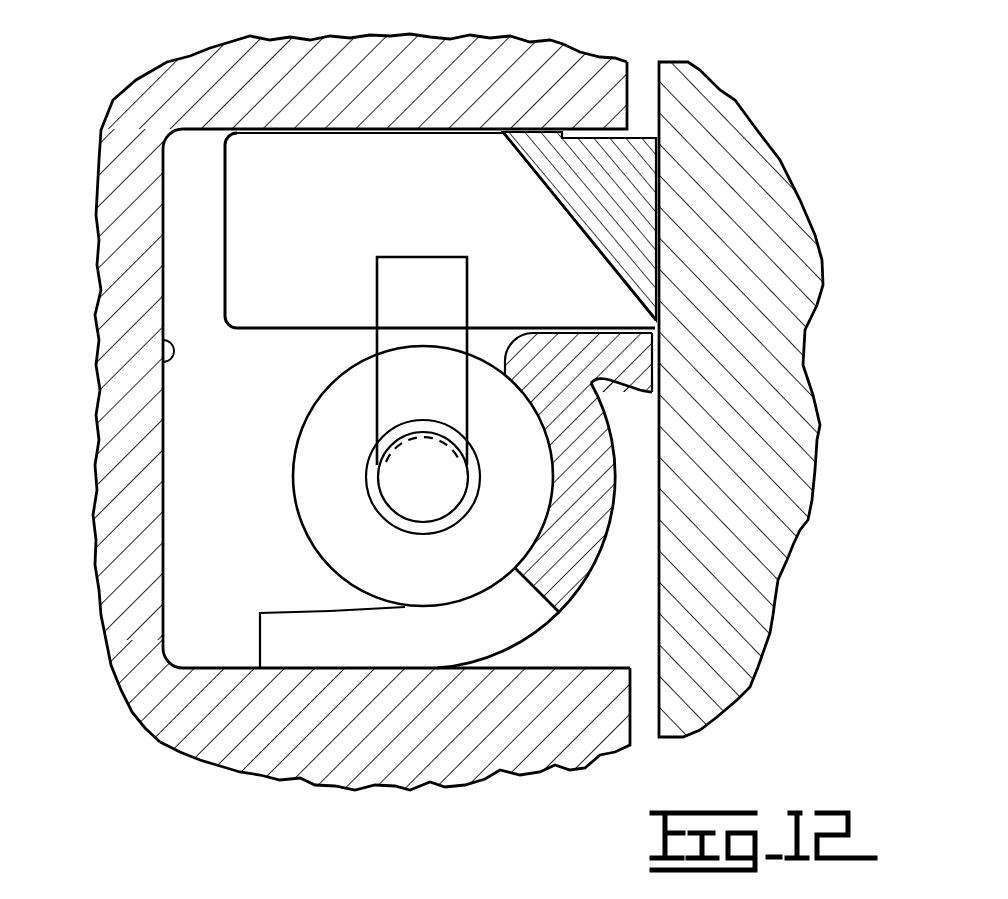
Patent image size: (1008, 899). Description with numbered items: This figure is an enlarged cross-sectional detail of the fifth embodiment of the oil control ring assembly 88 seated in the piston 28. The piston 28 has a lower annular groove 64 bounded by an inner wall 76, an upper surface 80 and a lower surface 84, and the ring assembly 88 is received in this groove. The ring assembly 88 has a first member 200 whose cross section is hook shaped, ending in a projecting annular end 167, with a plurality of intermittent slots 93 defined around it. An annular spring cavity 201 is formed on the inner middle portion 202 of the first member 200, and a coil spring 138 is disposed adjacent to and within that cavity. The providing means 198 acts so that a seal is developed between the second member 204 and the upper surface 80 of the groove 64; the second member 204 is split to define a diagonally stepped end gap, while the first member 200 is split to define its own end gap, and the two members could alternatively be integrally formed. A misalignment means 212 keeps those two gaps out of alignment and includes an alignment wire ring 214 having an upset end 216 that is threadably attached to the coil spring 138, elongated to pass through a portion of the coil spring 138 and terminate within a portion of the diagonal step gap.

The piston 28 is at (503, 48).
The lower annular groove 64 is at (163, 365).
The inner wall 76 is at (163, 405).
The upper surface 80 is at (347, 131).
The lower surface 84 is at (540, 670).
The oil control ring assembly 88 is at (228, 599).
The intermittent slots 93 is at (297, 656).
The coil spring 138 is at (322, 527).
The projecting annular end 167 is at (648, 386).
The providing means 198 is at (553, 483).
The first member 200 is at (642, 362).
The annular spring cavity 201 is at (362, 601).
The inner middle portion 202 is at (572, 573).
The second member 204 is at (642, 200).
The misalignment means 212 is at (413, 405).
The alignment wire ring 214 is at (408, 378).
The upset end 216 is at (412, 313).